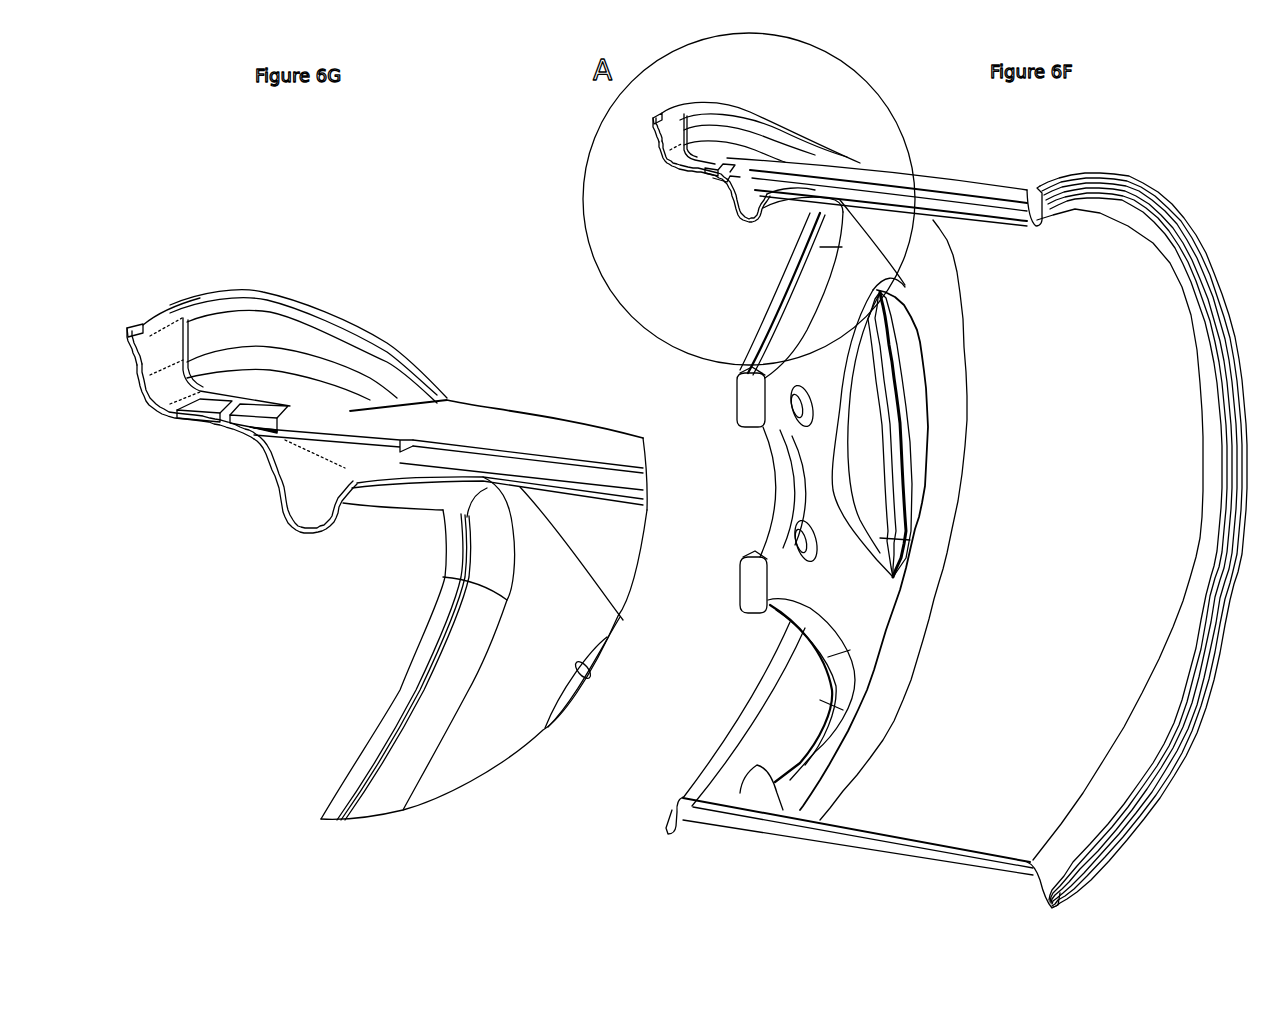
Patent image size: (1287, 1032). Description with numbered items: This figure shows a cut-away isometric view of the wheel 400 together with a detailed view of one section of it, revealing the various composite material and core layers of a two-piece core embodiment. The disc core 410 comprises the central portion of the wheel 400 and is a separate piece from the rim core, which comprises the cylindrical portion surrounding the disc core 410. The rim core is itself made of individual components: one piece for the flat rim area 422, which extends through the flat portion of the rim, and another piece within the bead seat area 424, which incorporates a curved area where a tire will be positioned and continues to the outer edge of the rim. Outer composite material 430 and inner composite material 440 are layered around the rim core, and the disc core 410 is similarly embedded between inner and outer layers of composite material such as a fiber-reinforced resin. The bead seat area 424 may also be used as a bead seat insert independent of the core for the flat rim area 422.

In FIG. 6F, the wheel 400 is at (758, 485).
In FIG. 6G, the disc core 410 is at (318, 482).
In FIG. 6F, the disc core 410 is at (747, 193).
In FIG. 6G, the flat rim area 422 is at (237, 407).
In FIG. 6F, the flat rim area 422 is at (708, 152).
In FIG. 6G, the bead seat area 424 is at (167, 388).
In FIG. 6F, the bead seat area 424 is at (673, 145).
In FIG. 6G, the outer composite material 430 is at (135, 327).
In FIG. 6F, the outer composite material 430 is at (655, 113).
In FIG. 6G, the inner composite material 440 is at (250, 422).
In FIG. 6F, the inner composite material 440 is at (720, 157).